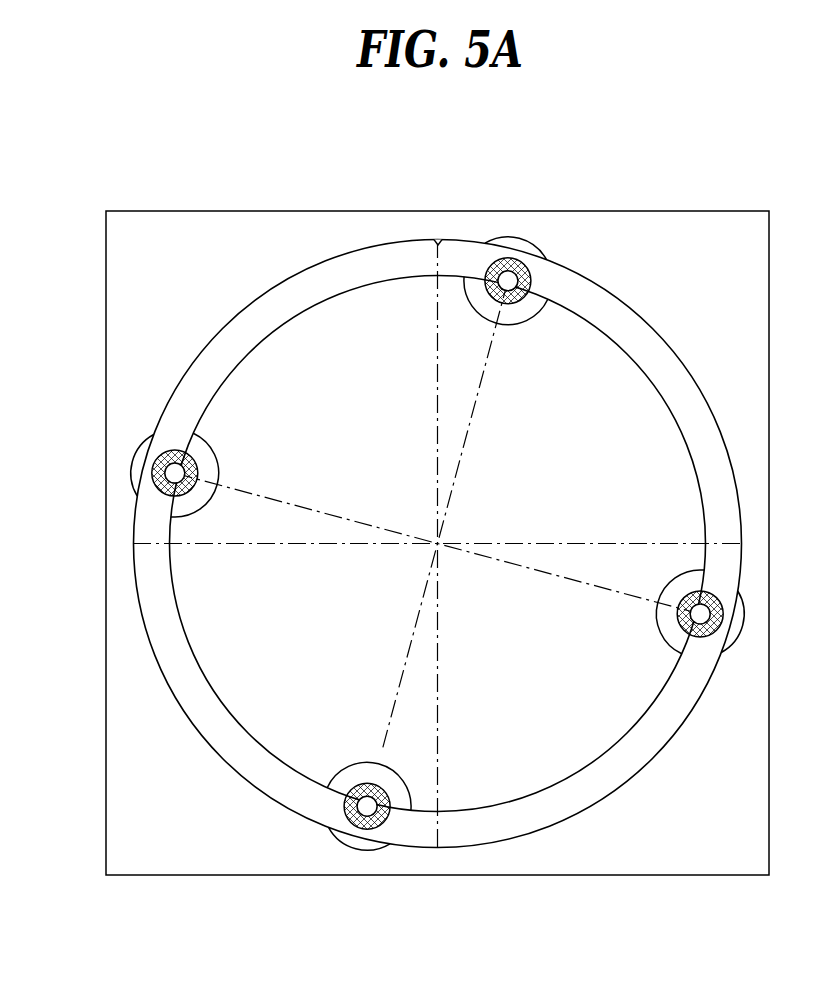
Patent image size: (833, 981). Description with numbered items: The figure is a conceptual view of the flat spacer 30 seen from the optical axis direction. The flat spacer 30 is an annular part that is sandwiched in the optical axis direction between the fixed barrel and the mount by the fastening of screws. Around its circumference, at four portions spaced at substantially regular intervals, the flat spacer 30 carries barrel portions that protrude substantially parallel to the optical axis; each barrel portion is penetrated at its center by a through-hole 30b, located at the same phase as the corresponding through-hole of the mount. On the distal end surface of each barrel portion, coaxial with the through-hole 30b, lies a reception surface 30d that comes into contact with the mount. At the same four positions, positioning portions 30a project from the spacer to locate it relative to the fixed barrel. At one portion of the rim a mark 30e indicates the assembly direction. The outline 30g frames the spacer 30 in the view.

The flat spacer 30 is at (374, 245).
The positioning portion 30a is at (518, 243).
The through-hole 30b is at (535, 300).
The reception surface 30d is at (503, 292).
The mark 30e is at (438, 238).
The square frame 30g is at (710, 211).